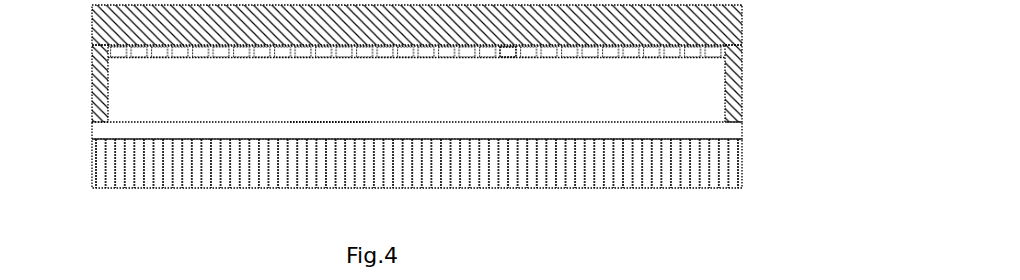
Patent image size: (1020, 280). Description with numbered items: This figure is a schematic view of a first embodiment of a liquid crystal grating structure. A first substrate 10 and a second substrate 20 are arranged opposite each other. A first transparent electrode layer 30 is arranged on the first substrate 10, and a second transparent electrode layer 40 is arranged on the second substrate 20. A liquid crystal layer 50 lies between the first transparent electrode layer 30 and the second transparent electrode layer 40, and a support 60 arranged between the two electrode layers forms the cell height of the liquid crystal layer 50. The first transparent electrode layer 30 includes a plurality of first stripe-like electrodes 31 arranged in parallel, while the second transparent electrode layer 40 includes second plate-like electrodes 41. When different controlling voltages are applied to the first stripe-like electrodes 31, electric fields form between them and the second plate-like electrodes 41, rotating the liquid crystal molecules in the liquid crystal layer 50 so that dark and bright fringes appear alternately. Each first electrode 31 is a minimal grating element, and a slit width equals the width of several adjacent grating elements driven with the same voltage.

The first substrate 10 is at (742, 25).
The second substrate 20 is at (715, 170).
The first transparent electrode layer 30 is at (725, 52).
The first stripe-like electrode 31 is at (507, 52).
The second transparent electrode layer 40 is at (722, 128).
The second plate-like electrode 41 is at (328, 133).
The liquid crystal layer 50 is at (703, 92).
The support 60 is at (92, 84).